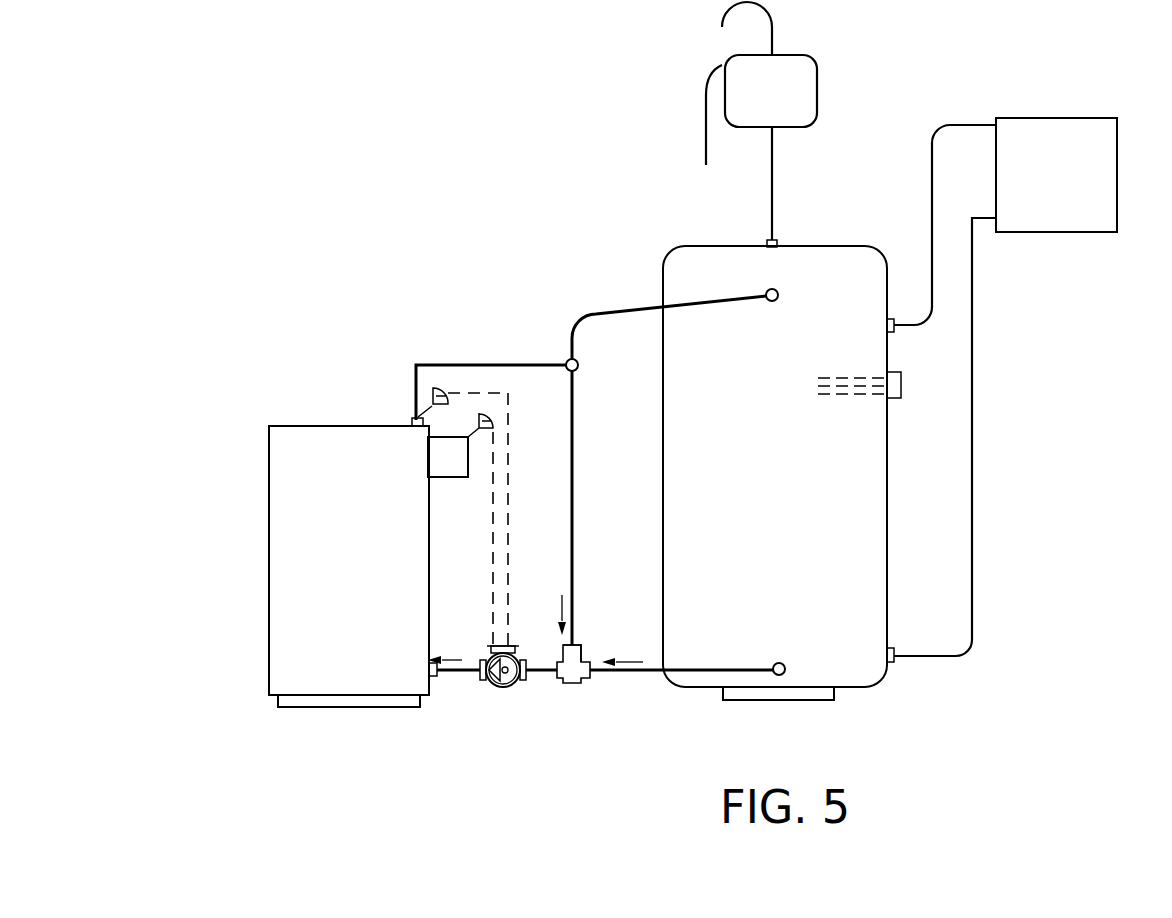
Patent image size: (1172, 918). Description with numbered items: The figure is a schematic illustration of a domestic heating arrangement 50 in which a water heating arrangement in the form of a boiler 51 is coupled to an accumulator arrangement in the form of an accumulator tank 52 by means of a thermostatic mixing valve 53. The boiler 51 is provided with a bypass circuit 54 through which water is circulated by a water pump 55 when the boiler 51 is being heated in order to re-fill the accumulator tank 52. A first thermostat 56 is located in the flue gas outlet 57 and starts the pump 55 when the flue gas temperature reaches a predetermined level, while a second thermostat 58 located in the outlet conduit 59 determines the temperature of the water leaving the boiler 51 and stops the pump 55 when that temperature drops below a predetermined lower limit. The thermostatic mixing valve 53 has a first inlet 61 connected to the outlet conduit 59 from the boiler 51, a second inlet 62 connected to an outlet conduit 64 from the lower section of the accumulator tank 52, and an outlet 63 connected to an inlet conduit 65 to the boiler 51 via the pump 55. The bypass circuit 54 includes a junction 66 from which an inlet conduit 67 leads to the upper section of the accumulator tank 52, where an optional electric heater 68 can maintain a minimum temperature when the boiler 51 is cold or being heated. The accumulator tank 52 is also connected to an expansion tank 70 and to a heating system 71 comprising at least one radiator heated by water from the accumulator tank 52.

The domestic heating arrangement 50 is at (378, 208).
The boiler 51 is at (334, 571).
The accumulator tank 52 is at (765, 482).
The thermostatic mixing valve 53 is at (574, 683).
The bypass circuit 54 is at (570, 462).
The water pump 55 is at (503, 688).
The first thermostat 56 is at (478, 413).
The flue gas outlet 57 is at (443, 455).
The second thermostat 58 is at (430, 392).
The outlet conduit 59 is at (415, 403).
The first inlet 61 is at (582, 636).
The second inlet 62 is at (604, 684).
The outlet 63 is at (546, 685).
The outlet conduit 64 is at (658, 684).
The inlet conduit 65 is at (444, 684).
The junction 66 is at (567, 359).
The inlet conduit 67 is at (633, 307).
The electric heater 68 is at (920, 377).
The expansion tank 70 is at (795, 90).
The heating system 71 is at (1076, 100).